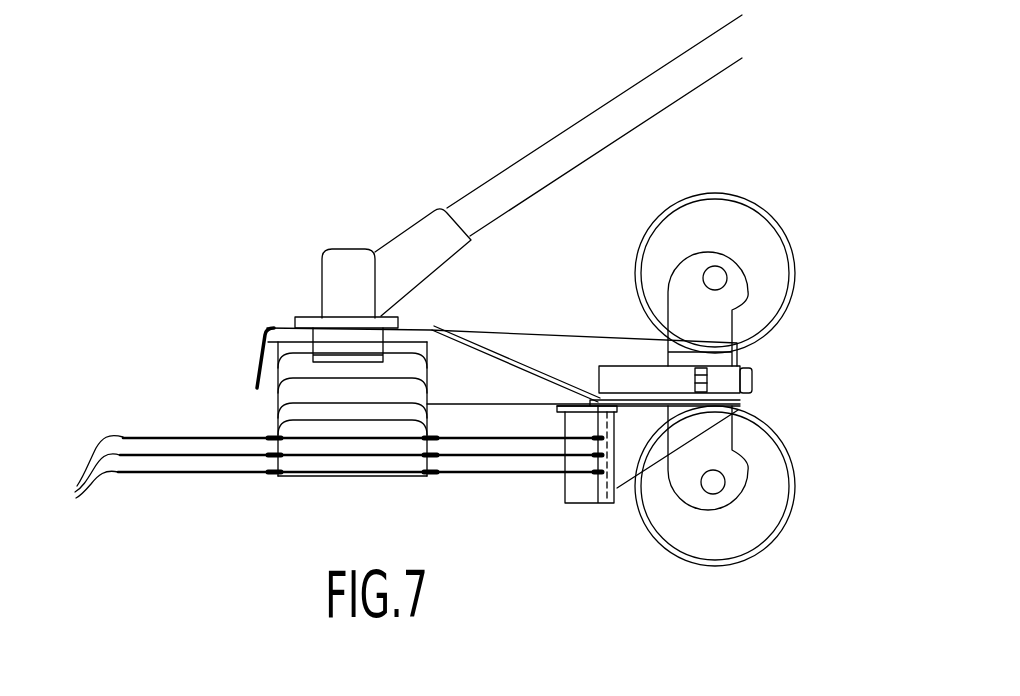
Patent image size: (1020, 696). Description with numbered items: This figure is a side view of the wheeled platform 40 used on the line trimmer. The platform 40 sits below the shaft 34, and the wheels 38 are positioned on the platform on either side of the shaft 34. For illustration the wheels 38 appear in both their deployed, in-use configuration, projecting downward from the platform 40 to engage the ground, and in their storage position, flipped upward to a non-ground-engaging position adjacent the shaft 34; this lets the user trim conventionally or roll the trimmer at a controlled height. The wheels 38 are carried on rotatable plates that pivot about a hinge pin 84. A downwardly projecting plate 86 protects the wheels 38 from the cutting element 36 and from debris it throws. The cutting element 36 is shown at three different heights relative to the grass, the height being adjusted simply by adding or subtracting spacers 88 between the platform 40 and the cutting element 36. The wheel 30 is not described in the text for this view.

The rear wheel 30 is at (777, 248).
The shaft 34 is at (566, 131).
The cutting element 36 is at (83, 475).
The wheels 38 is at (785, 460).
The wheeled platform 40 is at (346, 249).
The hinge pin 84 is at (753, 382).
The downwardly projecting plate 86 is at (605, 505).
The spacers 88 is at (283, 325).